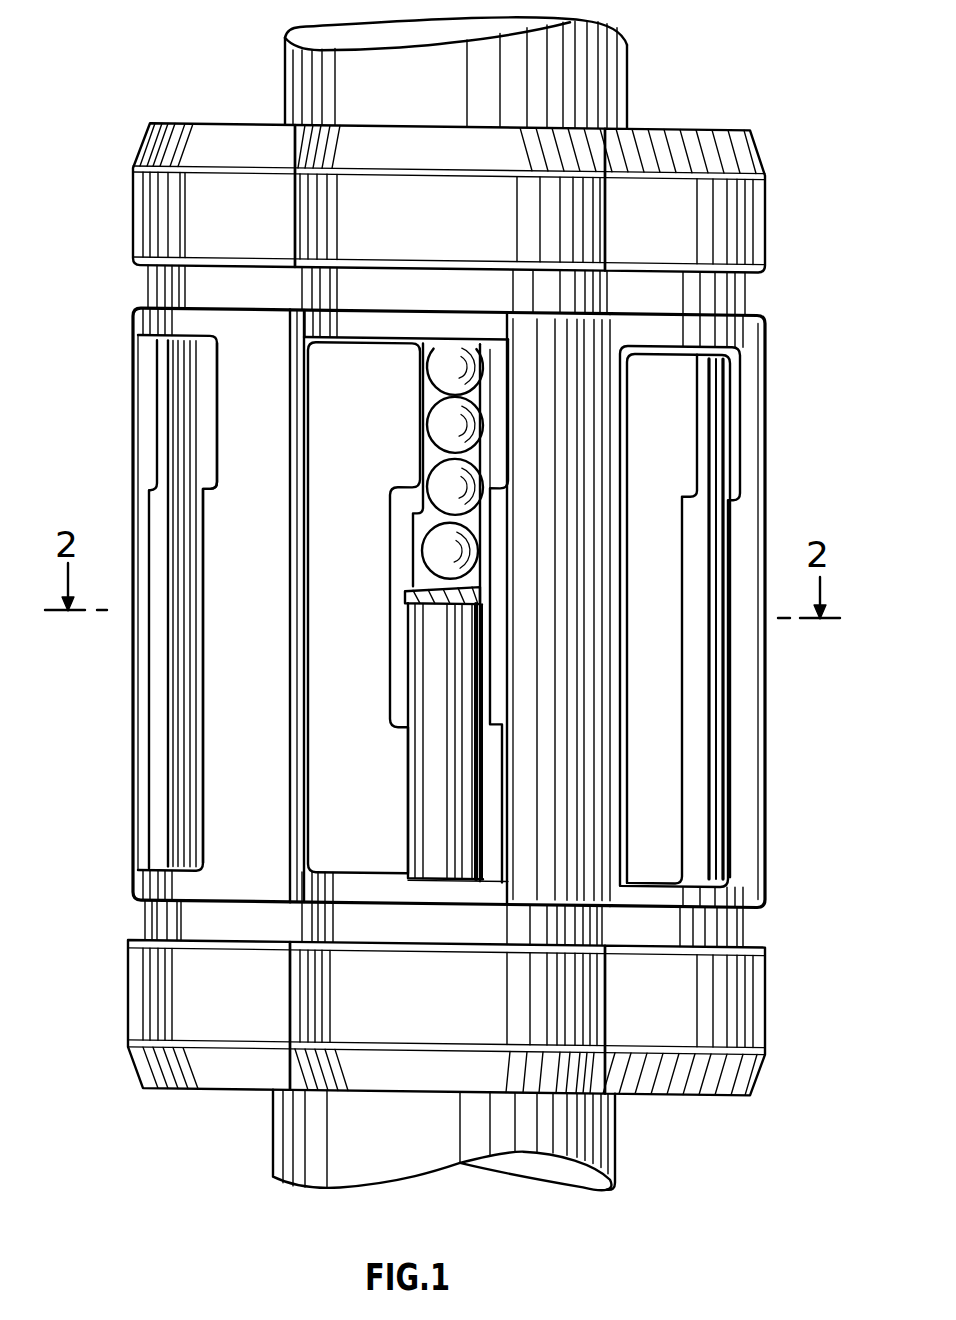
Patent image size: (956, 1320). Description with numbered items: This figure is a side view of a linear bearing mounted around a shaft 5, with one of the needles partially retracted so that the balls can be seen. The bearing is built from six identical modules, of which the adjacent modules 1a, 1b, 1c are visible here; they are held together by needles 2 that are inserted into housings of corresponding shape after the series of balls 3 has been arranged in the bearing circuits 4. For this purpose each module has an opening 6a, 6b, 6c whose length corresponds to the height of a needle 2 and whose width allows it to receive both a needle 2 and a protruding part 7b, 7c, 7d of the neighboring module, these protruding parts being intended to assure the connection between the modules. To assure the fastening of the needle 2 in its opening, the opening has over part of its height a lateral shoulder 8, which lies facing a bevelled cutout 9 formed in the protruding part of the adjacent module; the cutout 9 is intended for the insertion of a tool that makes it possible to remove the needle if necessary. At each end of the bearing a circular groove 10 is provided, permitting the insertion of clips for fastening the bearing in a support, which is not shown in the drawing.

The module 1a is at (134, 228).
The module 1b is at (390, 140).
The module 1c is at (708, 128).
The needle 2 is at (200, 410).
The ball 3 is at (437, 420).
The bearing circuit 4 is at (480, 457).
The shaft 5 is at (627, 95).
The opening 6a is at (185, 868).
The opening 6b is at (433, 880).
The opening 6c is at (705, 887).
The protruding part 7b is at (145, 442).
The protruding part 7c is at (322, 630).
The protruding part 7d is at (662, 540).
The lateral shoulder 8 is at (207, 557).
The bevelled cutout 9 is at (155, 637).
The circular groove 10 is at (143, 916).